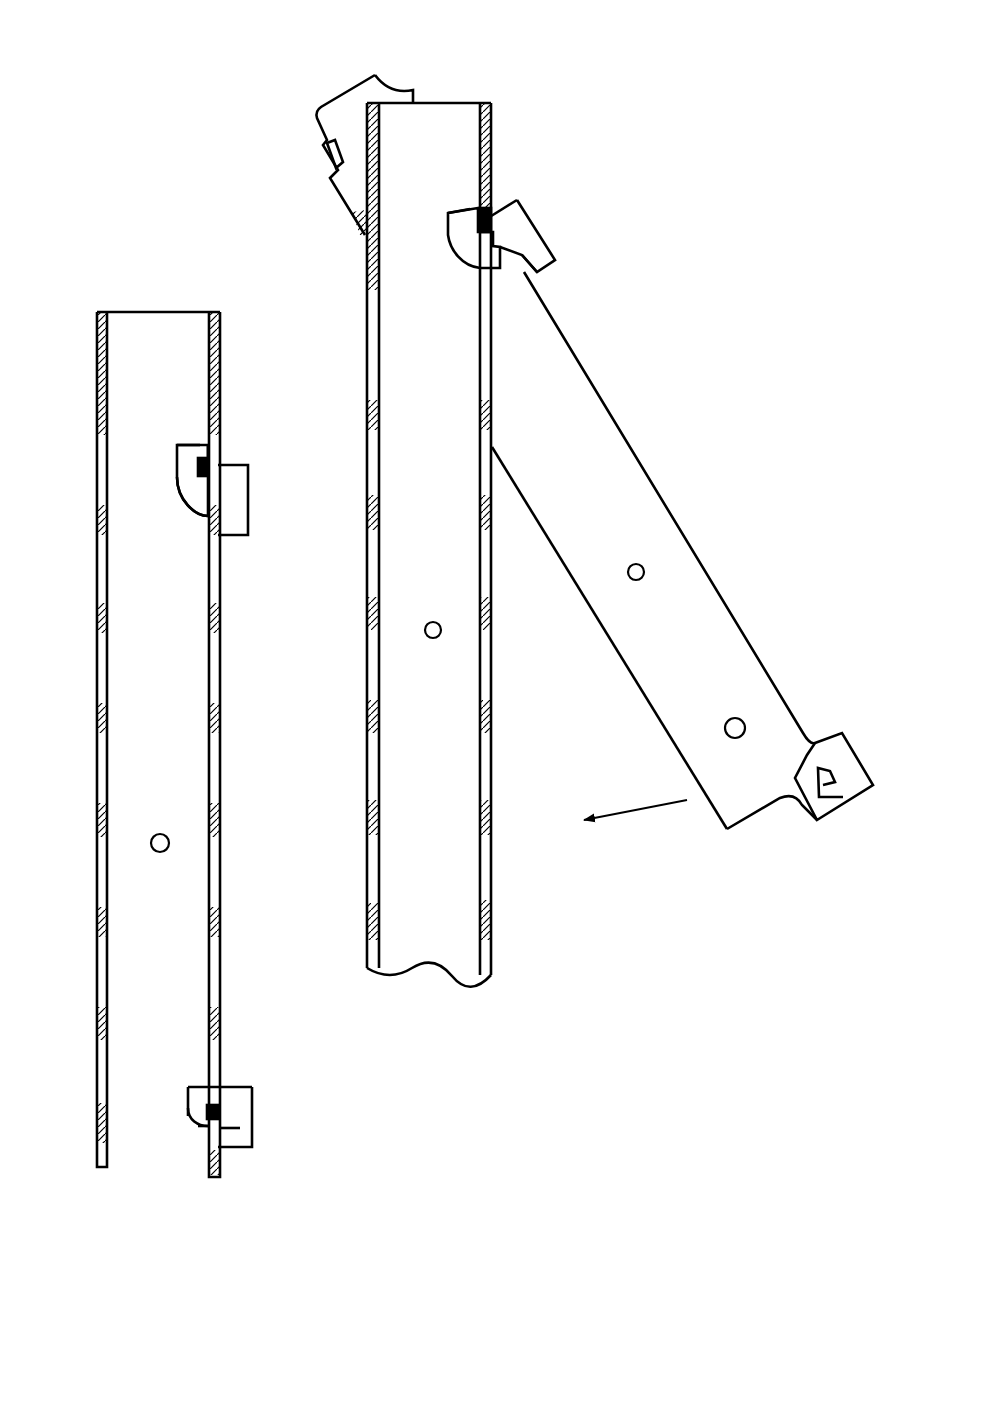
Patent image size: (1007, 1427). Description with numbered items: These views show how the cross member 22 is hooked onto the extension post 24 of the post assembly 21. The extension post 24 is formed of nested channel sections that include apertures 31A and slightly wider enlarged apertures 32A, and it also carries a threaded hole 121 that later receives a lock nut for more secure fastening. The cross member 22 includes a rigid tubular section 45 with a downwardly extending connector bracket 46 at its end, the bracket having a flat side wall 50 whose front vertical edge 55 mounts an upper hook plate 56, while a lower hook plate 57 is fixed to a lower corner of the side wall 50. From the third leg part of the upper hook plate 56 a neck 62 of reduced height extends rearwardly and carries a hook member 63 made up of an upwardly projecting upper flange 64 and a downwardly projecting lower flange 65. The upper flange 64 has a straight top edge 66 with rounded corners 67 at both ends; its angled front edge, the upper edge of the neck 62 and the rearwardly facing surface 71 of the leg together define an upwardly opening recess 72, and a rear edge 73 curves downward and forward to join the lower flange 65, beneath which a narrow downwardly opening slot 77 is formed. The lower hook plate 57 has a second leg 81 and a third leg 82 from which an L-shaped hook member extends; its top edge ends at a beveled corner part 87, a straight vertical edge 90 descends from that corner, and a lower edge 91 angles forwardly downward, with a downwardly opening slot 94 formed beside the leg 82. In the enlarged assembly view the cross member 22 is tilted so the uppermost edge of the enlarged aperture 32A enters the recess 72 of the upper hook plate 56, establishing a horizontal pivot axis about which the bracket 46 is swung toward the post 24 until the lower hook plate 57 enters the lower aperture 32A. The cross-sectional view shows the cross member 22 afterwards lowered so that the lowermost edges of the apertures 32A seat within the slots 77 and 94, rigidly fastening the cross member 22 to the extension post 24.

In FIG. 9, the post assembly 21 is at (187, 735).
In FIG. 10, the post assembly 21 is at (565, 527).
In FIG. 10, the cross member 22 is at (689, 536).
In FIG. 9, the extension post 24 is at (96, 637).
In FIG. 10, the extension post 24 is at (363, 481).
In FIG. 9, the apertures 31A is at (260, 744).
In FIG. 10, the apertures 31A is at (436, 539).
In FIG. 9, the enlarged apertures 32A is at (208, 466).
In FIG. 10, the enlarged apertures 32A is at (453, 930).
In FIG. 10, the rigid tubular section 45 is at (326, 160).
In FIG. 10, the connector bracket 46 is at (654, 550).
In FIG. 10, the side wall 50 is at (590, 446).
In FIG. 10, the front vertical edge 55 is at (748, 630).
In FIG. 9, the upper hook plate 56 is at (175, 442).
In FIG. 10, the upper hook plate 56 is at (501, 187).
In FIG. 9, the lower hook plate 57 is at (191, 1127).
In FIG. 10, the lower hook plate 57 is at (880, 690).
In FIG. 10, the neck 62 is at (497, 238).
In FIG. 9, the hook member 63 is at (165, 472).
In FIG. 9, the upper flange 64 is at (194, 426).
In FIG. 9, the lower flange 65 is at (196, 522).
In FIG. 9, the top edge 66 is at (183, 446).
In FIG. 10, the top edge 66 is at (470, 210).
In FIG. 10, the rounded corners 67 is at (485, 215).
In FIG. 10, the rearwardly facing surface 71 is at (490, 208).
In FIG. 9, the recess 72 is at (212, 466).
In FIG. 10, the recess 72 is at (488, 208).
In FIG. 10, the rear edge 73 is at (460, 242).
In FIG. 9, the slot 77 is at (216, 518).
In FIG. 10, the slot 77 is at (519, 273).
In FIG. 9, the second leg 81 is at (253, 1118).
In FIG. 9, the third leg 82 is at (241, 1135).
In FIG. 9, the beveled corner part 87 is at (188, 1093).
In FIG. 9, the straight vertical edge 90 is at (195, 1120).
In FIG. 9, the lower edge 91 is at (203, 1128).
In FIG. 9, the slot 94 is at (215, 1090).
In FIG. 9, the threaded holes 121 is at (154, 851).